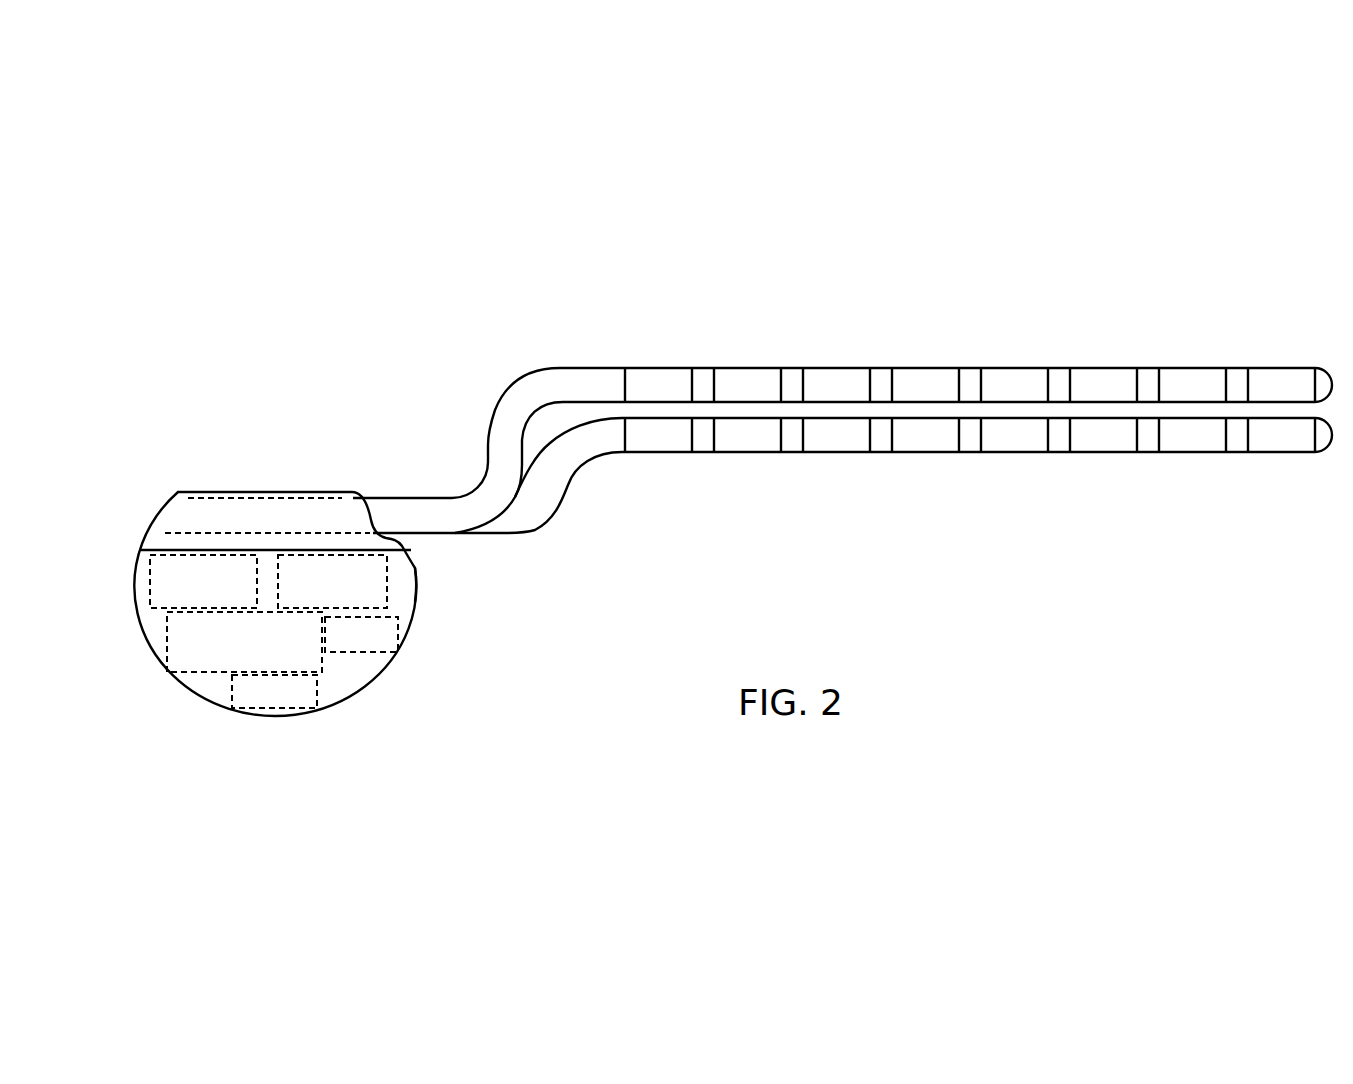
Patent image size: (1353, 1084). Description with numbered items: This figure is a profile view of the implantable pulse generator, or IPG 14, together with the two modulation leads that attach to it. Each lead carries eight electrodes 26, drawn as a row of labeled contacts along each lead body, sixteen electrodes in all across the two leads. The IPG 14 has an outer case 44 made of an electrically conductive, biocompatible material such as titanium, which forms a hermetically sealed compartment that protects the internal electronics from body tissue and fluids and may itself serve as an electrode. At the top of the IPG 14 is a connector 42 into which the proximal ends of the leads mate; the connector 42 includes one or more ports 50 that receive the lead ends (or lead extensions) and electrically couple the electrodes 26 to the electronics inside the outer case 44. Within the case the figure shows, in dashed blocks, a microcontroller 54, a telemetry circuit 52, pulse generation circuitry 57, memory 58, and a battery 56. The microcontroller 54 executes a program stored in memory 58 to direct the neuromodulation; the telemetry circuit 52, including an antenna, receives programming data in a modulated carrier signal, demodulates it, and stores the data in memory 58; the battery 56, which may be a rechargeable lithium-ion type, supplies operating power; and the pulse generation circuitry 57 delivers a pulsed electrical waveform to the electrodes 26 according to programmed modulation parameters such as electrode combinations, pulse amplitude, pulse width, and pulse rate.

The implantable pulse generator 14 is at (183, 444).
The connector 42 is at (167, 540).
The port 50 is at (288, 498).
The microcontroller 54 is at (150, 583).
The telemetry circuit 52 is at (387, 587).
The pulse generation circuitry 57 is at (202, 673).
The memory 58 is at (375, 652).
The battery 56 is at (273, 708).
The outer case 44 is at (413, 623).
The electrodes 26 is at (840, 367).